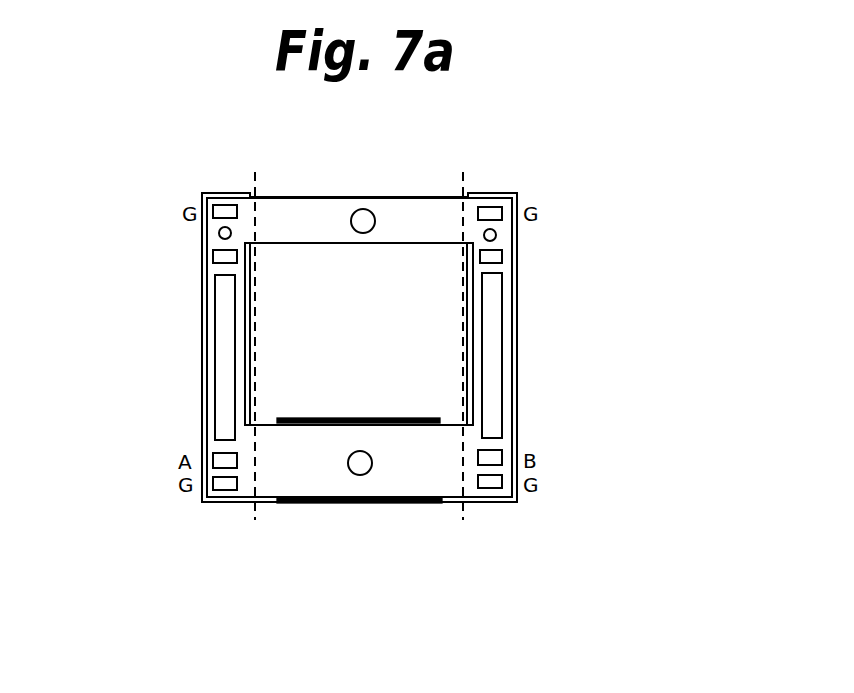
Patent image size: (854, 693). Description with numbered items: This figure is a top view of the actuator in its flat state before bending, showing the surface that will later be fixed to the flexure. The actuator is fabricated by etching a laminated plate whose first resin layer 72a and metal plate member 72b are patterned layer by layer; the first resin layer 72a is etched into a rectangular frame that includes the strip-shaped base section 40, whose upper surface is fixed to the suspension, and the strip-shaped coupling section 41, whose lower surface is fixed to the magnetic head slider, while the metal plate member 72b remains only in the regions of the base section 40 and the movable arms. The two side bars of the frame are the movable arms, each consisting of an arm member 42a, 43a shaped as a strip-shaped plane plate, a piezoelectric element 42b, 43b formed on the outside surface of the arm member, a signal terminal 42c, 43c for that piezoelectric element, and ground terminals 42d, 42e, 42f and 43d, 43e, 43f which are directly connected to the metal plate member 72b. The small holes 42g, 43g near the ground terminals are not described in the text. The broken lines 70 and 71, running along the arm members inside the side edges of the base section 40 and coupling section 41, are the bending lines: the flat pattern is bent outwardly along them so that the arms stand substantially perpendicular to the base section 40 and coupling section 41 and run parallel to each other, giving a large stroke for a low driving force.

The base section 40 is at (400, 480).
The coupling section 41 is at (316, 212).
The arm member 42a is at (503, 270).
The piezoelectric element 42b is at (493, 362).
The signal terminal 42c is at (498, 457).
The ground terminal 42d is at (502, 258).
The ground terminal 42e is at (498, 482).
The ground terminal 42f is at (490, 208).
The right positioning hole 42g is at (492, 234).
The arm member 43a is at (210, 270).
The piezoelectric element 43b is at (222, 353).
The signal terminal 43c is at (220, 457).
The ground terminal 43d is at (213, 256).
The ground terminal 43e is at (223, 483).
The ground terminal 43f is at (213, 208).
The left positioning hole 43g is at (219, 233).
The broken line 70 is at (463, 520).
The broken line 71 is at (255, 520).
The first resin layer 72a is at (417, 218).
The metal plate member 72b is at (338, 507).